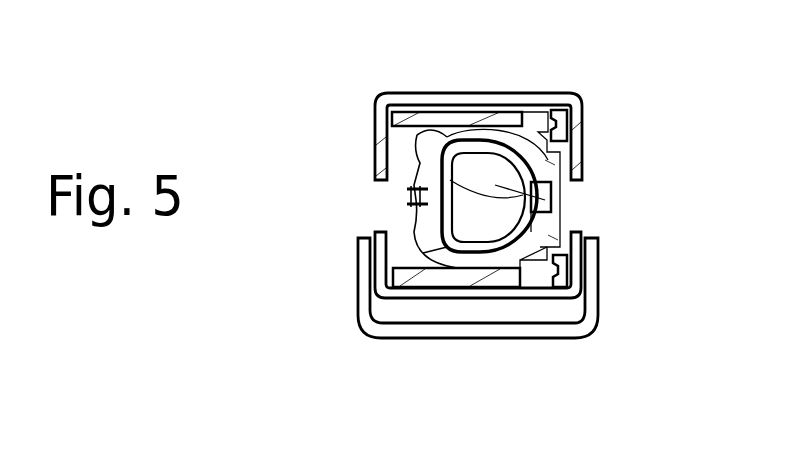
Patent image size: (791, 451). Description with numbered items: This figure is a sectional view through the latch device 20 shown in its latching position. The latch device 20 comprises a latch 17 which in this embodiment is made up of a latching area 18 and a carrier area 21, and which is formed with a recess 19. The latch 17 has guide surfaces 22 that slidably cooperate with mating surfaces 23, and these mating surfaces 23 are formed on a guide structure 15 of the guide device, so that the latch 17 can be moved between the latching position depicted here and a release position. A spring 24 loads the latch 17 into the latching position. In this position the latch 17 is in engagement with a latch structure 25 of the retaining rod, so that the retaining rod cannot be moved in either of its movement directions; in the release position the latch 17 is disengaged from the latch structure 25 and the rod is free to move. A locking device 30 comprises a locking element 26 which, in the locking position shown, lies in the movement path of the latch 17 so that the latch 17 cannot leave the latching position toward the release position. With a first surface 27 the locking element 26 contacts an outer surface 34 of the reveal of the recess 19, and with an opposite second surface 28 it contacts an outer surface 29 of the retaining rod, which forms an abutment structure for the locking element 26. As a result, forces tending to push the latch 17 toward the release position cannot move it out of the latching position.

The guide structure 15 is at (581, 101).
The latch 17 is at (440, 125).
The latching area 18 is at (410, 205).
The recess 19 is at (513, 262).
The latch device 20 is at (608, 190).
The carrier area 21 is at (490, 250).
The guide surfaces 22 is at (551, 109).
The mating surfaces 23 is at (487, 160).
The spring 24 is at (395, 245).
The latch structure 25 is at (407, 190).
The locking element 26 is at (565, 195).
The first surface 27 is at (548, 204).
The second surface 28 is at (450, 170).
The outer surface 29 is at (447, 255).
The locking device 30 is at (588, 227).
The outer surface 34 is at (575, 265).